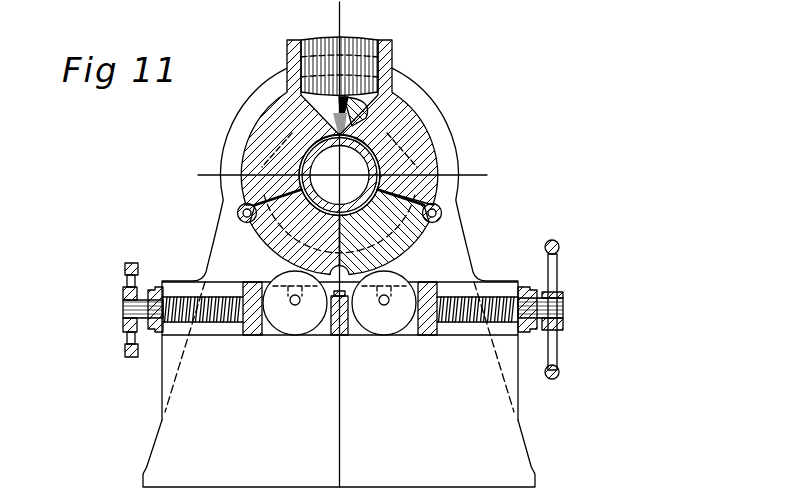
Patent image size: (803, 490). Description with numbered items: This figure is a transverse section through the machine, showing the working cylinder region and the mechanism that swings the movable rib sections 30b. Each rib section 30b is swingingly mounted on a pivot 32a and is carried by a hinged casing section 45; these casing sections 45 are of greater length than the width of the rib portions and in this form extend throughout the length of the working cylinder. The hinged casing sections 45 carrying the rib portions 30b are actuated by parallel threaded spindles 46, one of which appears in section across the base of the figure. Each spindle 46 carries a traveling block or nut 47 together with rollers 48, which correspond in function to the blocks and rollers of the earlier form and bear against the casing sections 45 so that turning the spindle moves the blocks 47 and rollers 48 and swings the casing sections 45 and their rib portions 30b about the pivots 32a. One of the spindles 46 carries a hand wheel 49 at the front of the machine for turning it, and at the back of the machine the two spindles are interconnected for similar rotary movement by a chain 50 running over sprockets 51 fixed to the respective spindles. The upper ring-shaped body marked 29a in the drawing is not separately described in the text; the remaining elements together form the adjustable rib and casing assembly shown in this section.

The clamp ring body 29a is at (270, 138).
The movable rib section 30b is at (263, 195).
The pivot 32a is at (233, 213).
The casing section 45 is at (415, 242).
The threaded spindle 46 is at (500, 322).
The traveling block 47 is at (432, 322).
The roller 48 is at (377, 325).
The hand wheel 49 is at (556, 273).
The chain 50 is at (125, 352).
The sprocket 51 is at (125, 328).